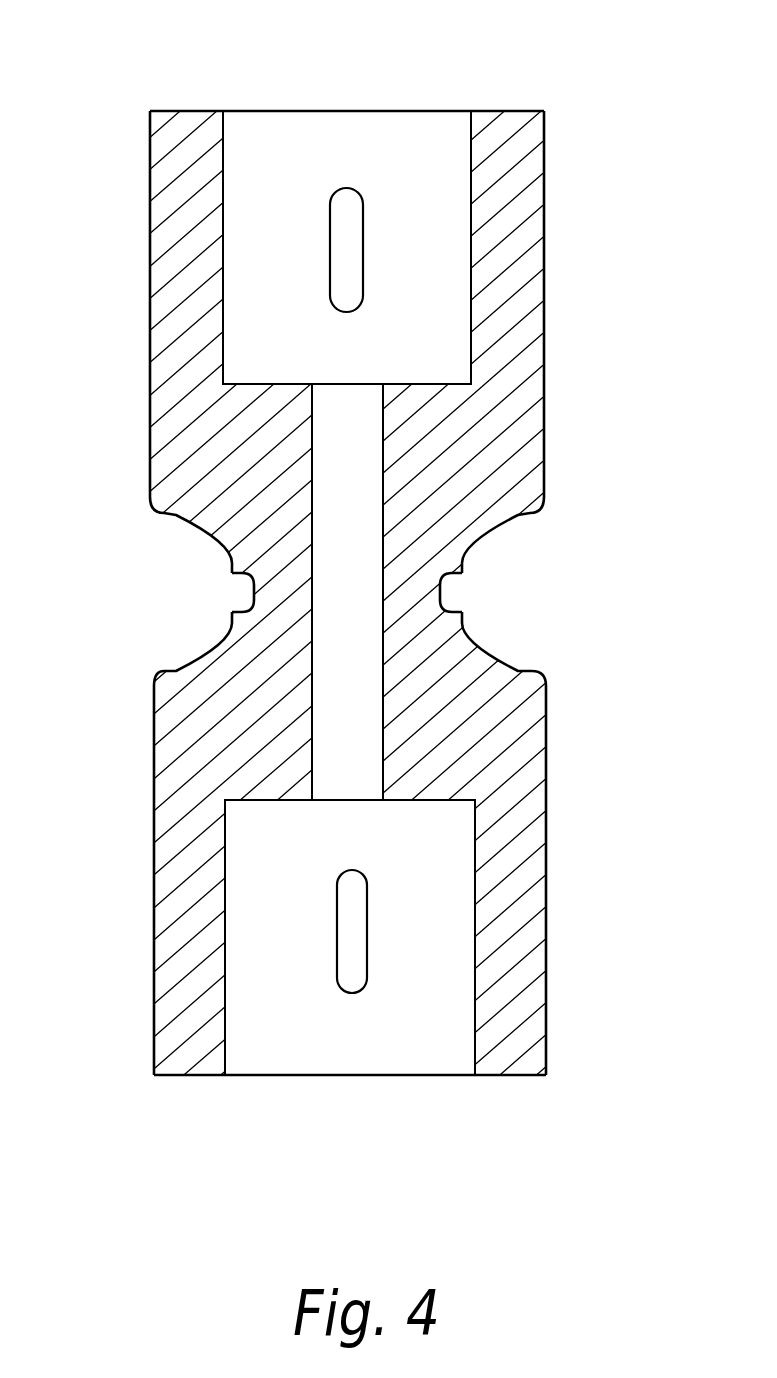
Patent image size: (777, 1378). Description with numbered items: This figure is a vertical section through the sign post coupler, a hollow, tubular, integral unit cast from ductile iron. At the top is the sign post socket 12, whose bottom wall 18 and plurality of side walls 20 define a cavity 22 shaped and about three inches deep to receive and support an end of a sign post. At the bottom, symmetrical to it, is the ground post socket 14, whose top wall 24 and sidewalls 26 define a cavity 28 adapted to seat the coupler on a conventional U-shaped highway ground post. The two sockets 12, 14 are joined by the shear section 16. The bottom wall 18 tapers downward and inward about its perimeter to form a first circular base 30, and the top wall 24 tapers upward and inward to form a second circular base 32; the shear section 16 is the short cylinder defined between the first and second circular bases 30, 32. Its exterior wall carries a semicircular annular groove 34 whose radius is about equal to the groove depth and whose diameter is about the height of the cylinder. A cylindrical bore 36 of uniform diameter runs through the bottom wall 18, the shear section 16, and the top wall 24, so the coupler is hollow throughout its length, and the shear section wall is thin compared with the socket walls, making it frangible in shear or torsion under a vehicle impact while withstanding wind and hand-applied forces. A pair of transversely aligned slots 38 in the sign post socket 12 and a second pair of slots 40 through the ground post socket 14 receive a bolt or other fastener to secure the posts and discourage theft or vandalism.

The sign post socket 12 is at (547, 277).
The ground post socket 14 is at (568, 823).
The shear section 16 is at (497, 610).
The bottom wall 18 is at (266, 388).
The side walls 20 is at (544, 173).
The cavity 22 is at (392, 105).
The top wall 24 is at (437, 800).
The sidewalls 26 is at (548, 913).
The cavity 28 is at (288, 1078).
The first circular base 30 is at (240, 582).
The second circular base 32 is at (240, 605).
The annular groove 34 is at (442, 595).
The cylindrical bore 36 is at (387, 427).
The slots 38 is at (364, 222).
The slots 40 is at (367, 913).